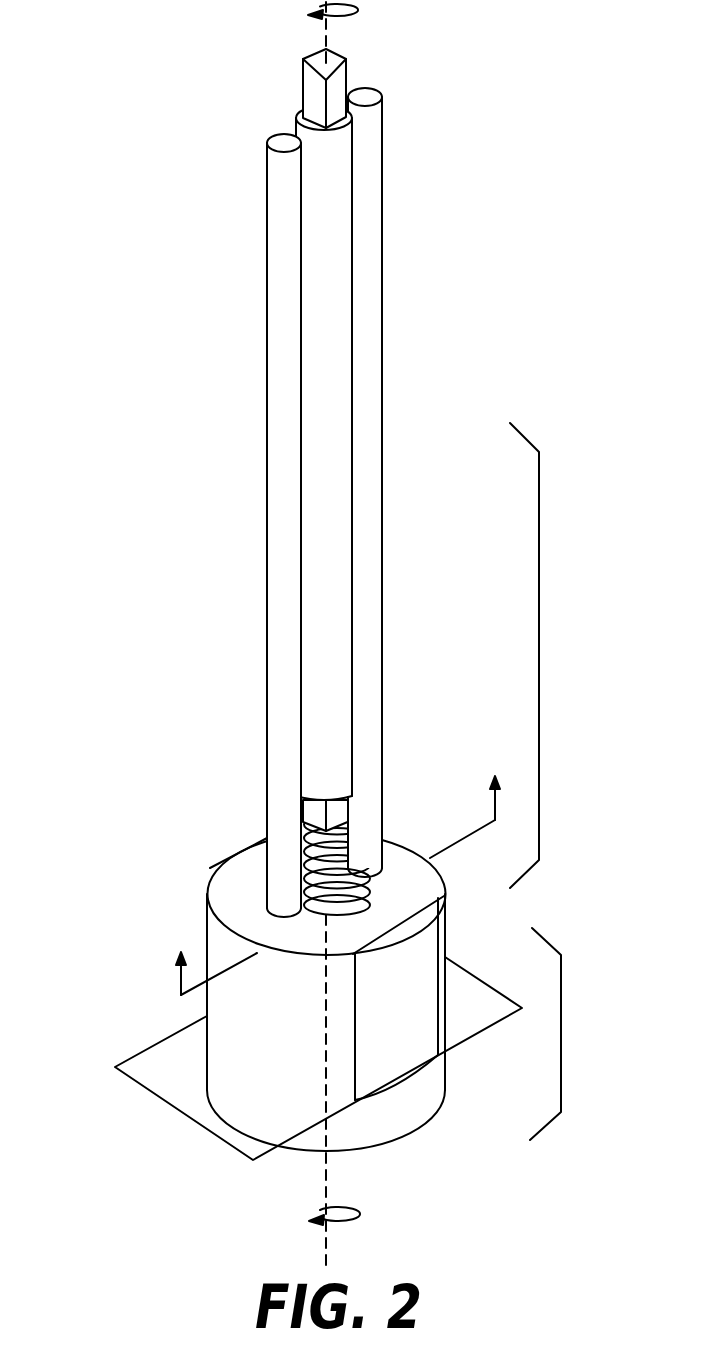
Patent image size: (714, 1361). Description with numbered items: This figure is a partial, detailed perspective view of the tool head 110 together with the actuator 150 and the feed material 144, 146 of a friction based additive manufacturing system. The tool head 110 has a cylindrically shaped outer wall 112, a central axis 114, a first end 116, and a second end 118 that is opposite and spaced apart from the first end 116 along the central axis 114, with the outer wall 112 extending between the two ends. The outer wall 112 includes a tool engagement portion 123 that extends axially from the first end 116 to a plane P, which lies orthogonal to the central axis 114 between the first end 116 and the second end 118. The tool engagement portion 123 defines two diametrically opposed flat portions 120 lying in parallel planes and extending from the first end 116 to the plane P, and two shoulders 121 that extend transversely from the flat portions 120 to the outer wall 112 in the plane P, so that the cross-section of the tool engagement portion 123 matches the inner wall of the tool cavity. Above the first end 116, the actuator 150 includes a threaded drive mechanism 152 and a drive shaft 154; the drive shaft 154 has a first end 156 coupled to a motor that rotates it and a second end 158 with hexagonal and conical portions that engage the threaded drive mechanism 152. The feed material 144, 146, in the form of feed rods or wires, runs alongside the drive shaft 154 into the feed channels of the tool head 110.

The tool head 110 is at (346, 637).
The outer wall 112 is at (223, 1057).
The central axis 114 is at (332, 1175).
The first end 116 is at (240, 880).
The second end 118 is at (422, 1134).
The flat portions 120 is at (443, 1018).
The shoulders 121 is at (414, 1076).
The tool engagement portion 123 is at (561, 1038).
The feed material 144 is at (274, 678).
The feed material 146 is at (380, 272).
The actuator 150 is at (539, 677).
The threaded drive mechanism 152 is at (348, 857).
The drive shaft 154 is at (345, 445).
The first end 156 is at (347, 68).
The second end 158 is at (346, 813).
The plane P is at (163, 1092).